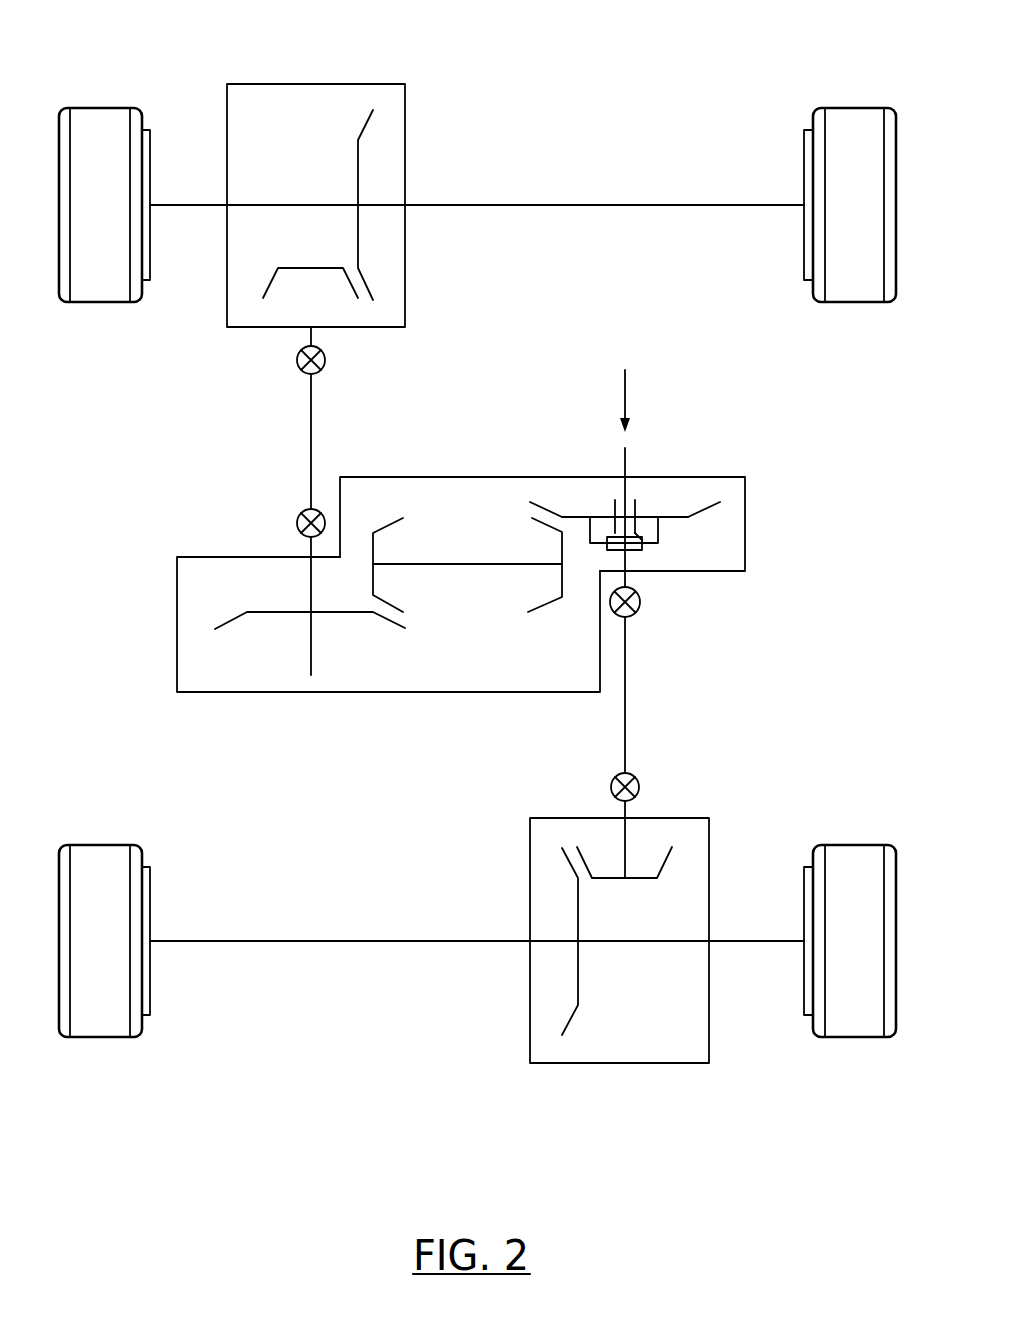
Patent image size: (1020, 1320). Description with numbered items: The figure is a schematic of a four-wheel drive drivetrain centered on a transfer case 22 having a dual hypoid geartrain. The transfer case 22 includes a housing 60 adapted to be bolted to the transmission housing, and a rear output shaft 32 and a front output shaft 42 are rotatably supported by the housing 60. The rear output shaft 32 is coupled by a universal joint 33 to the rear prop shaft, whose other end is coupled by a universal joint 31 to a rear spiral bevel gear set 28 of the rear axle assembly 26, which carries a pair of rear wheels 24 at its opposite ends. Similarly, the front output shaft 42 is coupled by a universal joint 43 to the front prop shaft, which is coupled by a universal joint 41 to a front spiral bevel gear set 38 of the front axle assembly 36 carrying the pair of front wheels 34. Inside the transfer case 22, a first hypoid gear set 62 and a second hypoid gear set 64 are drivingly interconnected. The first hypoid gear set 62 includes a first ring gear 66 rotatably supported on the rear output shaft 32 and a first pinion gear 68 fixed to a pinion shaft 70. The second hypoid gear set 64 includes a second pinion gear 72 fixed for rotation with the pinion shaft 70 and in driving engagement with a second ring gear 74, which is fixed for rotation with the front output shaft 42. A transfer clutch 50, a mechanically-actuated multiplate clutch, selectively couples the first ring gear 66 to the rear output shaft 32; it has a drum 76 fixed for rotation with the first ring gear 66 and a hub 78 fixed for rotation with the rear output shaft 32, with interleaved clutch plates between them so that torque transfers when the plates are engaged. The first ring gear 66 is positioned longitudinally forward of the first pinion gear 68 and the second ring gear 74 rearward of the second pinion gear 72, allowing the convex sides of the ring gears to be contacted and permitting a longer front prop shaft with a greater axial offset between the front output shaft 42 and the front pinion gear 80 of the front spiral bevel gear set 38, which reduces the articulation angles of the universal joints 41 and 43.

The transfer case 22 is at (760, 580).
The rear wheels 24 is at (98, 1037).
The rear axle assembly 26 is at (307, 965).
The rear spiral bevel gear set 28 is at (560, 916).
The universal joint 31 is at (640, 785).
The rear output shaft 32 is at (627, 493).
The universal joint 33 is at (618, 618).
The front wheels 34 is at (98, 108).
The front axle assembly 36 is at (652, 212).
The front spiral bevel gear set 38 is at (385, 248).
The universal joint 41 is at (326, 358).
The front output shaft 42 is at (310, 578).
The universal joint 43 is at (297, 523).
The transfer clutch 50 is at (665, 548).
The housing 60 is at (722, 478).
The first hypoid gear set 62 is at (525, 492).
The second hypoid gear set 64 is at (415, 632).
The first ring gear 66 is at (708, 507).
The first pinion gear 68 is at (550, 528).
The pinion shaft 70 is at (473, 567).
The second pinion gear 72 is at (390, 525).
The second ring gear 74 is at (228, 622).
The drum 76 is at (607, 542).
The hub 78 is at (630, 543).
The front pinion gear 80 is at (288, 268).